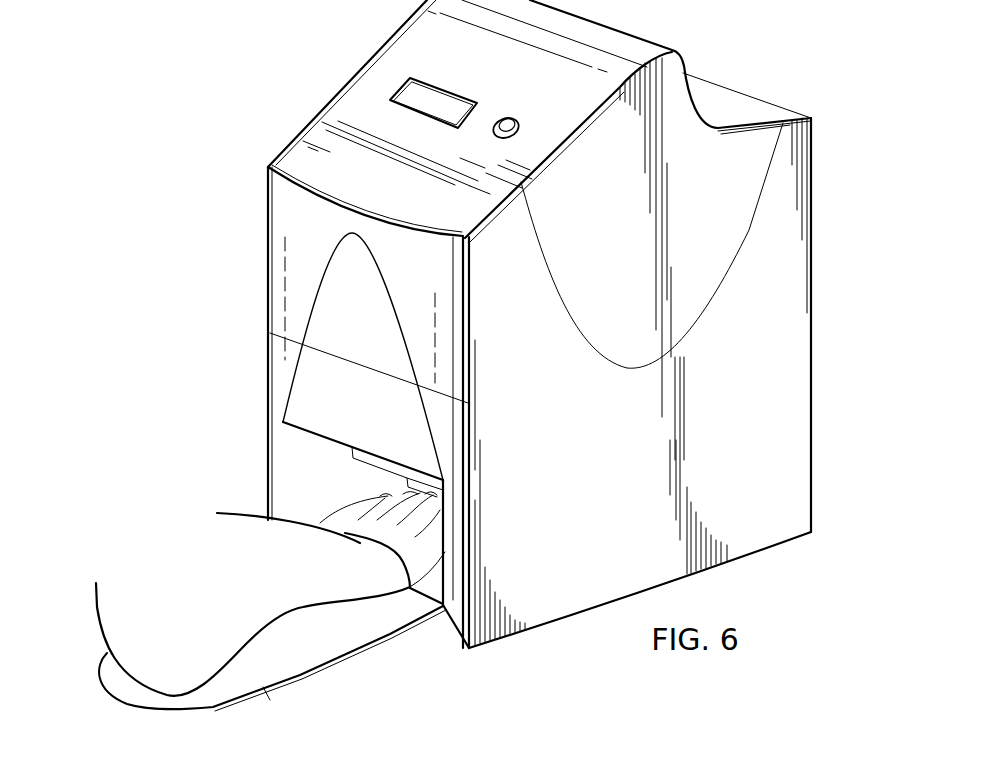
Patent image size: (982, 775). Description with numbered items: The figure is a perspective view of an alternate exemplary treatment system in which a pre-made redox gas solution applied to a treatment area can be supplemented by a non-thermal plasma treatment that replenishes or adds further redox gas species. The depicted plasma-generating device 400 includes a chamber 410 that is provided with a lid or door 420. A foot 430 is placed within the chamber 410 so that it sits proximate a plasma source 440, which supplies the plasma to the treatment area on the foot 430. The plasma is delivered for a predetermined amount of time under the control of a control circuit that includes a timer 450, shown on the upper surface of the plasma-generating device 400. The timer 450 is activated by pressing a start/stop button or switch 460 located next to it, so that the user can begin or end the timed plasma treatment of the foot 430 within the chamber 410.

The plasma-generating device 400 is at (813, 325).
The chamber 410 is at (281, 477).
The lid or door 420 is at (338, 645).
The foot 430 is at (97, 620).
The plasma source 440 is at (390, 460).
The timer 450 is at (447, 92).
The start/stop button or switch 460 is at (507, 117).